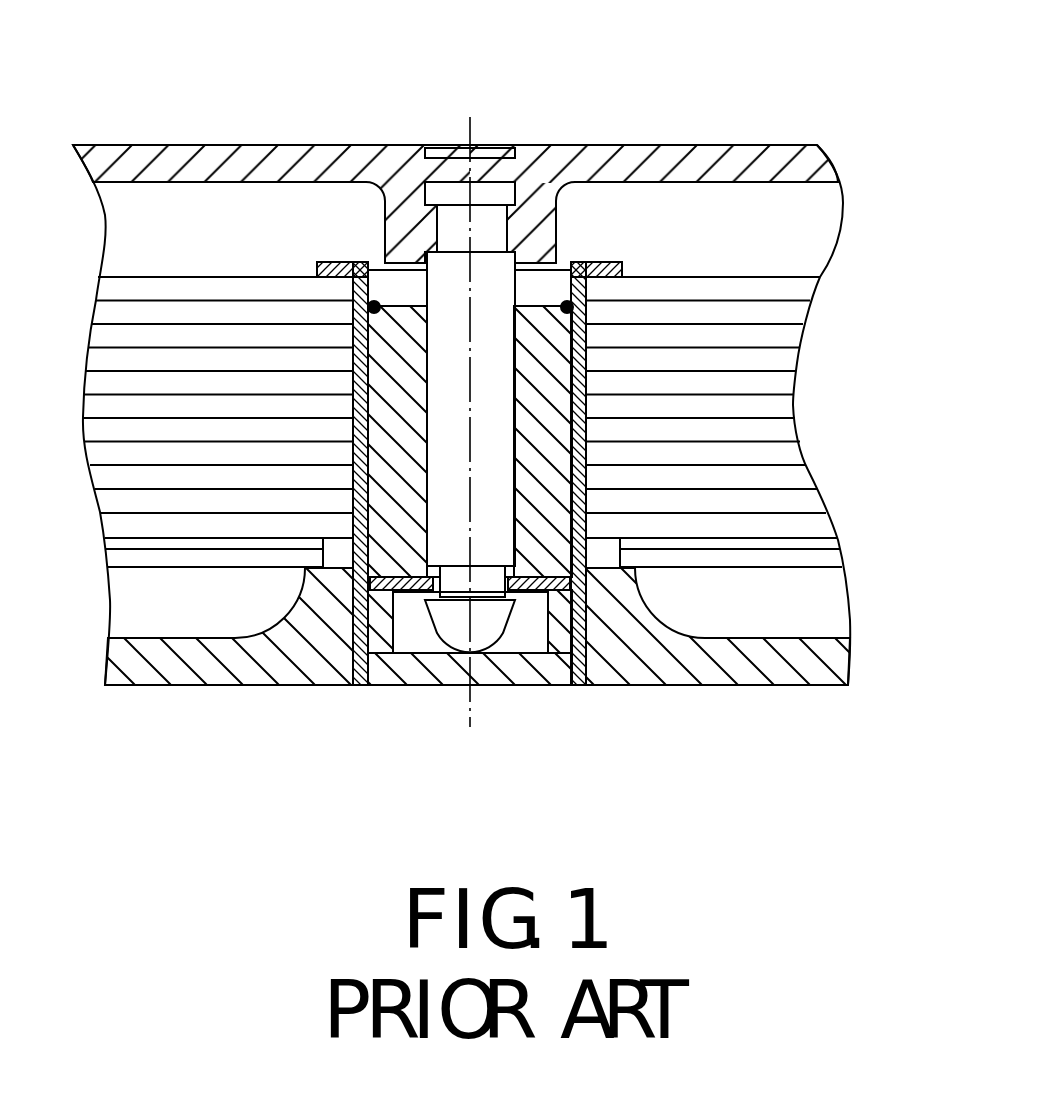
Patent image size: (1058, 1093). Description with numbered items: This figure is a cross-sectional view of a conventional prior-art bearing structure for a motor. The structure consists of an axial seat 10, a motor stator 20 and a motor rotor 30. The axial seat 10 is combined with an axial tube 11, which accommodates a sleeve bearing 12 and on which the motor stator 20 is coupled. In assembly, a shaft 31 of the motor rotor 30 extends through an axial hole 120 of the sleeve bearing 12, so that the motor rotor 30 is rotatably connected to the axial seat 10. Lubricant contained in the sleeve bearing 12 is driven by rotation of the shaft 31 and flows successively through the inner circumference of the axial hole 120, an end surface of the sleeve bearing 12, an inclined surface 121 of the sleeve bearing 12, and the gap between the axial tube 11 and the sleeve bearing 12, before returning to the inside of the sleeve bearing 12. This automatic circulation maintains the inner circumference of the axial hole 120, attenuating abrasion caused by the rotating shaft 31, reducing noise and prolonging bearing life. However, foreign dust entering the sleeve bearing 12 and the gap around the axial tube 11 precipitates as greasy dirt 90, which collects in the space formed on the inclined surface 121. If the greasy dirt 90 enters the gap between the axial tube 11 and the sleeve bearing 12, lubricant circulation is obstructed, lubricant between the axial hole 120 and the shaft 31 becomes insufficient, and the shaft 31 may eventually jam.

The axial seat 10 is at (745, 673).
The axial tube 11 is at (597, 672).
The sleeve bearing 12 is at (547, 543).
The axial hole 120 is at (423, 497).
The inclined surface 121 is at (380, 312).
The motor stator 20 is at (763, 382).
The motor rotor 30 is at (765, 160).
The shaft 31 is at (457, 277).
The greasy dirt 90 is at (567, 300).